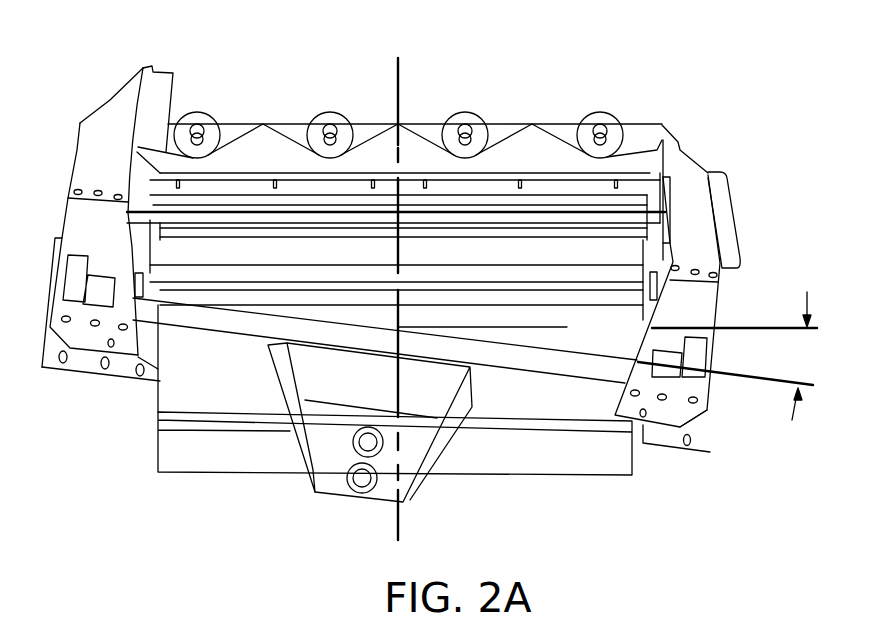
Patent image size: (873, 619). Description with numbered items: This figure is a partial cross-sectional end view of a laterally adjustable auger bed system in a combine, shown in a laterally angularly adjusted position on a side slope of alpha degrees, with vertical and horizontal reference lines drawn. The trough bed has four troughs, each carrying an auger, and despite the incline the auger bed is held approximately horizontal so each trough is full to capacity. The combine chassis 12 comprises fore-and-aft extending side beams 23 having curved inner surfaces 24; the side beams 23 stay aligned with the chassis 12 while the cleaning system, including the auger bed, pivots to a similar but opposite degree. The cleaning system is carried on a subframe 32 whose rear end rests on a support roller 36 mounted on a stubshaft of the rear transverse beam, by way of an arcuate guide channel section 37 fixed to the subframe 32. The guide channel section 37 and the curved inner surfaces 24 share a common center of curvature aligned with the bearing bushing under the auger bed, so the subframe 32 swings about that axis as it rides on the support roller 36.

The chassis 12 is at (560, 403).
The side beams 23 is at (118, 128).
The curved inner surfaces 24 is at (157, 98).
The subframe 32 is at (607, 300).
The support roller 36 is at (475, 335).
The guide channel section 37 is at (565, 320).